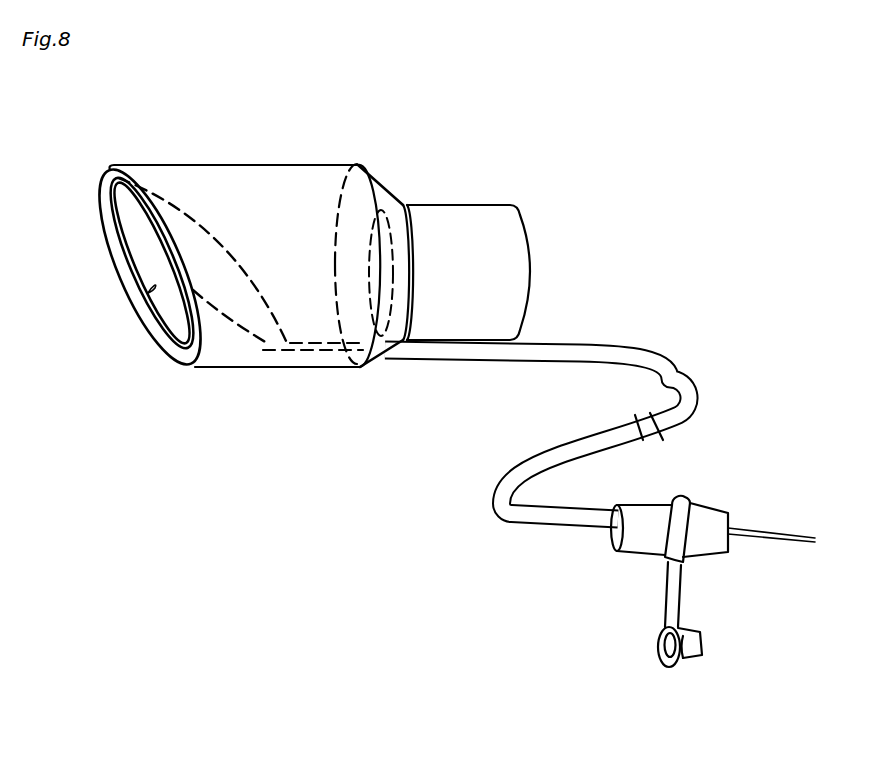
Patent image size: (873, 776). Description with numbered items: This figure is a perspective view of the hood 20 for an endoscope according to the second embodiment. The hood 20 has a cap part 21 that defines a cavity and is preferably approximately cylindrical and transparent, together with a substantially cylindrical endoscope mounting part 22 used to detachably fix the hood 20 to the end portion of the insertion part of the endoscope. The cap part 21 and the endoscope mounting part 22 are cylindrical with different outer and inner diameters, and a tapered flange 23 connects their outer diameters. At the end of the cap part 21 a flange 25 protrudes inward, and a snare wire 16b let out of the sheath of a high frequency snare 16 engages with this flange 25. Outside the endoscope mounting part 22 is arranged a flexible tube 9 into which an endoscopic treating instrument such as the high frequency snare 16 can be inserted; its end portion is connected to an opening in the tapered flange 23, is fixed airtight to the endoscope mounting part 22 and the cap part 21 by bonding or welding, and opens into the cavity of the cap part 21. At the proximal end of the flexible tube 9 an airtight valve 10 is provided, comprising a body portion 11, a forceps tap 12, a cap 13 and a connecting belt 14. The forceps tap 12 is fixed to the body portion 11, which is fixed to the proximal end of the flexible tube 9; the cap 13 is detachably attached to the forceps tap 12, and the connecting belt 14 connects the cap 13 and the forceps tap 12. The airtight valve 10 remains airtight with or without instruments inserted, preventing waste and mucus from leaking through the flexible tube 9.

The flexible tube 9 is at (662, 358).
The airtight valve 10 is at (709, 579).
The body portion 11 is at (648, 508).
The forceps tap 12 is at (728, 512).
The cap 13 is at (690, 663).
The connecting belt 14 is at (673, 599).
The high frequency snare 16 is at (257, 352).
The snare wire 16b is at (217, 240).
The hood 20 is at (306, 252).
The cap part 21 is at (322, 162).
The endoscope mounting part 22 is at (491, 212).
The tapered flange 23 is at (384, 193).
The flange 25 is at (148, 293).